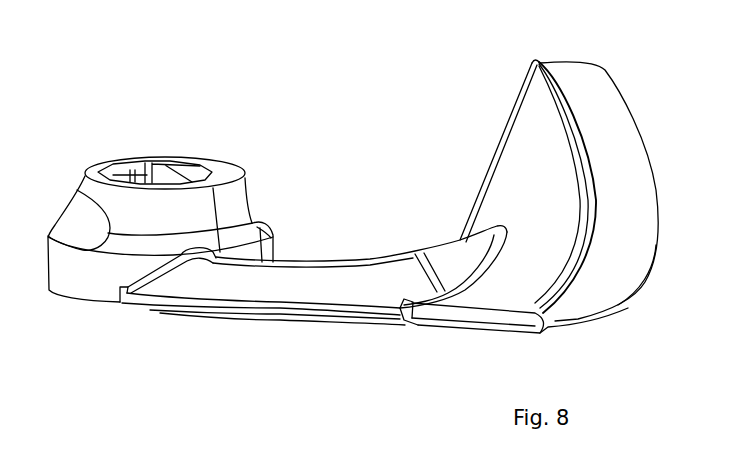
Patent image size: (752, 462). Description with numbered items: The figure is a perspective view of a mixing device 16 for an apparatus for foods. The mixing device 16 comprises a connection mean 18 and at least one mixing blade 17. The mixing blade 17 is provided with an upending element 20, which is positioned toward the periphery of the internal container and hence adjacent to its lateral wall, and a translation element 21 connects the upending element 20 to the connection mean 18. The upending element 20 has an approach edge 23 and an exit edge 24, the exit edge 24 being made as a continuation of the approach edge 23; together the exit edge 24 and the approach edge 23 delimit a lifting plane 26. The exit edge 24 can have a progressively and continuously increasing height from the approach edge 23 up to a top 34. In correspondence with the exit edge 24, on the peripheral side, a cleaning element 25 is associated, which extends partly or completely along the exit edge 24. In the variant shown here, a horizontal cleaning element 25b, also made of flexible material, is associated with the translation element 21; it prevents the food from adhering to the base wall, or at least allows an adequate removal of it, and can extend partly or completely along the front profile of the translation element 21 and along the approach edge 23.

The mixing device 16 is at (97, 150).
The connection mean 18 is at (87, 190).
The upending element 20 is at (498, 122).
The translation element 21 is at (332, 331).
The approach edge 23 is at (496, 318).
The exit edge 24 is at (567, 135).
The cleaning element 25 is at (625, 183).
The horizontal cleaning element 25b is at (213, 318).
The lifting plane 26 is at (516, 180).
The top 34 is at (536, 60).
The mixing blade 17 is at (422, 340).